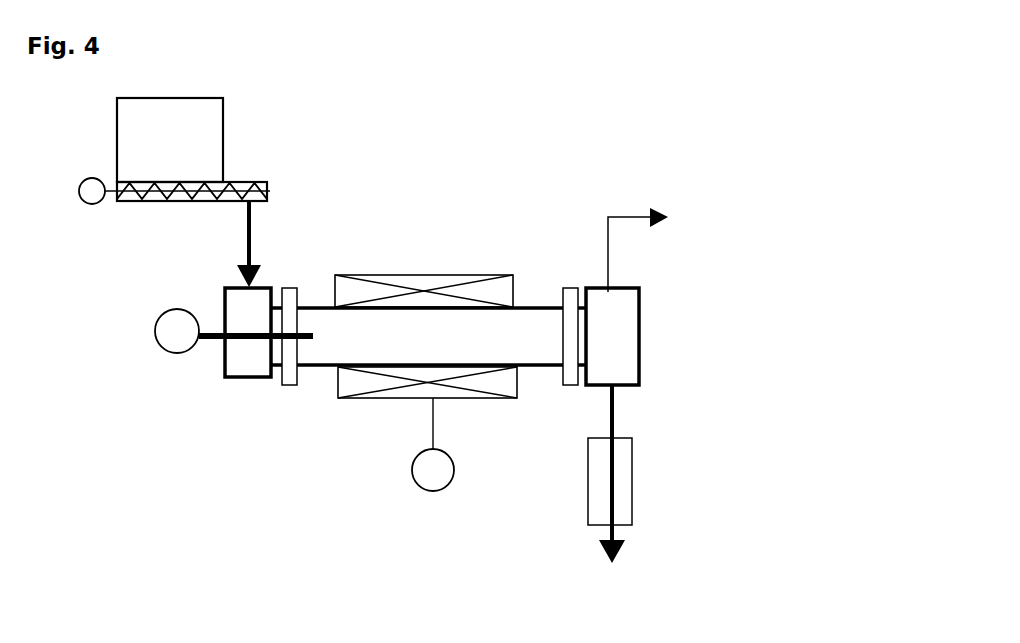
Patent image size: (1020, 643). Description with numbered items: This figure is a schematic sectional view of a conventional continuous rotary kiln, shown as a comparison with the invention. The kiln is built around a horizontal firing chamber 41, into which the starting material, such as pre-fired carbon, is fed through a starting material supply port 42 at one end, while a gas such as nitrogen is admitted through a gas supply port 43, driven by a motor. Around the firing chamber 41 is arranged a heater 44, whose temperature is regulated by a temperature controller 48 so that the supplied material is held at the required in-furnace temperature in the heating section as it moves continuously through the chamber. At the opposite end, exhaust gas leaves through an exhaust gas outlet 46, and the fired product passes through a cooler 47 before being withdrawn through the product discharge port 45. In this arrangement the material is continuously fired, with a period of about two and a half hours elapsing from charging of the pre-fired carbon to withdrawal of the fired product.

The firing chamber 41 is at (340, 365).
The starting material supply port 42 is at (193, 192).
The gas supply port 43 is at (262, 358).
The heater 44 is at (426, 327).
The product discharge port 45 is at (626, 486).
The exhaust gas outlet 46 is at (667, 248).
The cooler 47 is at (650, 465).
The temperature controller 48 is at (456, 464).